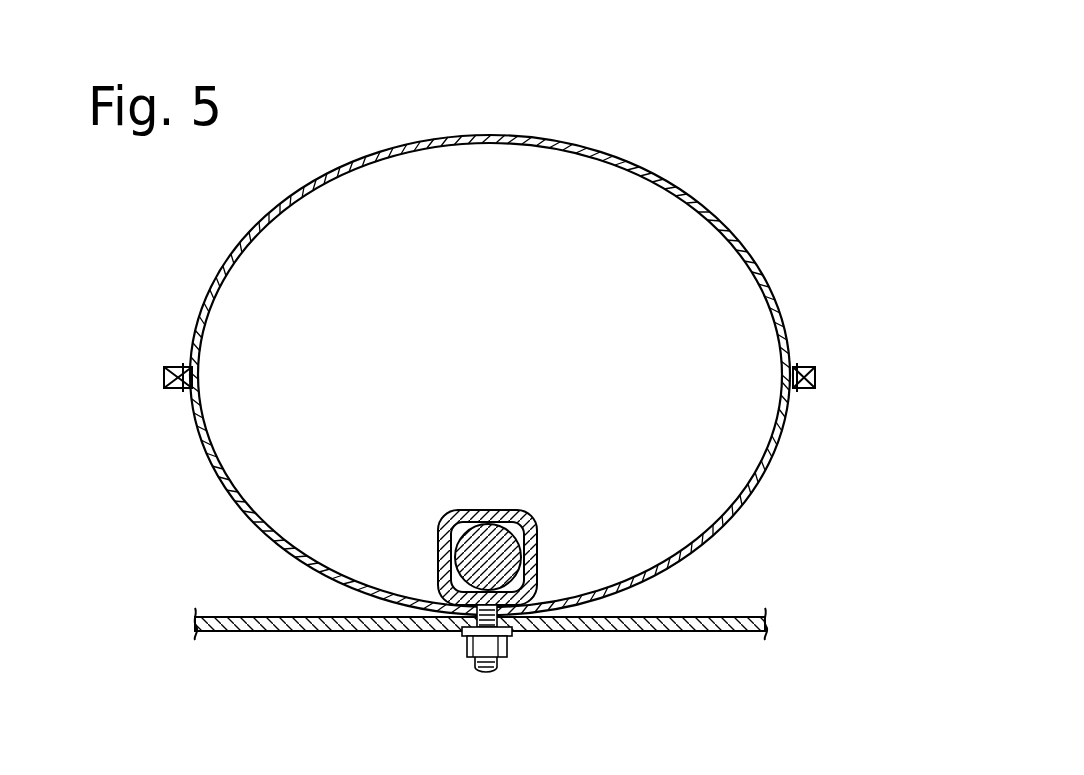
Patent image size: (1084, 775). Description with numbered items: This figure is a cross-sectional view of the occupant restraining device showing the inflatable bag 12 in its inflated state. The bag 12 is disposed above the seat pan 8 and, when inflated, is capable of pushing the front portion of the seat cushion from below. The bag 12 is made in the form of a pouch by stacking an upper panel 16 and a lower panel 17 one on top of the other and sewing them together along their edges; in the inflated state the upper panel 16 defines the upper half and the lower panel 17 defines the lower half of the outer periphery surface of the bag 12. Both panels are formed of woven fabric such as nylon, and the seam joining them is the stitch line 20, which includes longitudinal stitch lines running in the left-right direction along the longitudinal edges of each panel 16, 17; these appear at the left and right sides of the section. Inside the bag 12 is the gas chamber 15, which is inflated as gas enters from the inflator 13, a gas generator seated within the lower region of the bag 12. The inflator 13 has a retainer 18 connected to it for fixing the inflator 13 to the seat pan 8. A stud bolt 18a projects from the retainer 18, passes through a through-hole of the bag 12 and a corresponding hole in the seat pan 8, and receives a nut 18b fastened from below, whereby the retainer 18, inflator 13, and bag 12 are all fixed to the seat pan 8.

The seat pan 8 is at (727, 631).
The inflatable bag 12 is at (513, 341).
The inflator 13 is at (443, 520).
The gas chamber 15 is at (440, 372).
The upper panel 16 is at (692, 195).
The lower panel 17 is at (742, 498).
The retainer 18 is at (528, 510).
The stud bolt 18a is at (488, 672).
The nut 18b is at (507, 650).
The stitch line 20 is at (183, 367).